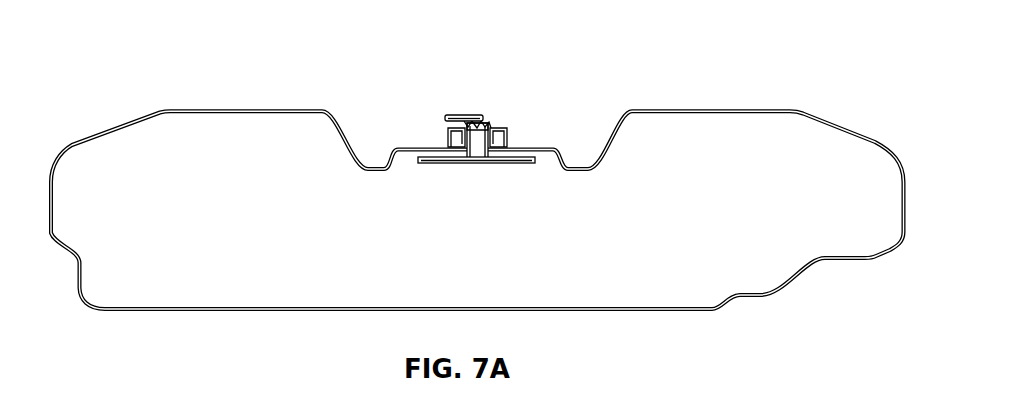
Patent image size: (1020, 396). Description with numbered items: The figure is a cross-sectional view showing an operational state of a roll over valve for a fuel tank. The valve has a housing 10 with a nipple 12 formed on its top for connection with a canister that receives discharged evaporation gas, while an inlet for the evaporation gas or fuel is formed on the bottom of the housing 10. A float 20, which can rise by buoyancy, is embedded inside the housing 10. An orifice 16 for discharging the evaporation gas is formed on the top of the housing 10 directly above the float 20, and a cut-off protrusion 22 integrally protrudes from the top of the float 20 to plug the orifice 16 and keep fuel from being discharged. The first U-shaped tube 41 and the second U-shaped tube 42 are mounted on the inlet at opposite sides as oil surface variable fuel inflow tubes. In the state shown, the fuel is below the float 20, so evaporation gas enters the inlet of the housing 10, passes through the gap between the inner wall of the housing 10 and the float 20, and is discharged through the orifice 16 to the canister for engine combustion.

The housing 10 is at (510, 148).
The nipple 12 is at (447, 115).
The orifice 16 is at (471, 120).
The float 20 is at (468, 133).
The cut-off protrusion 22 is at (490, 118).
The first U-shaped tube 41 is at (523, 163).
The second U-shaped tube 42 is at (430, 163).